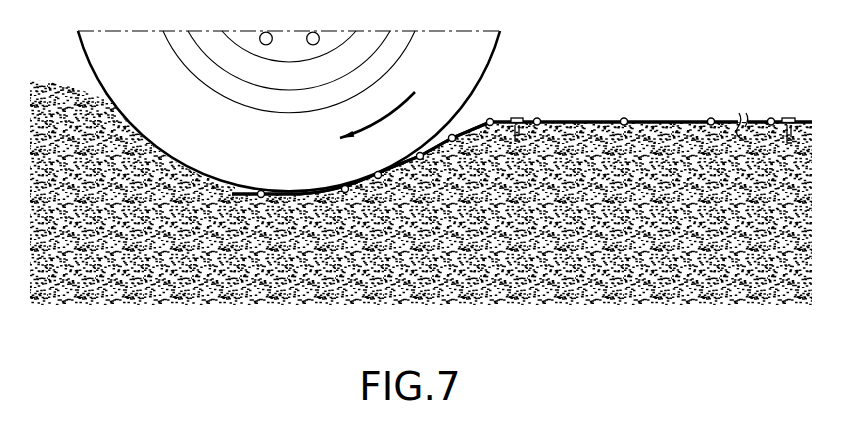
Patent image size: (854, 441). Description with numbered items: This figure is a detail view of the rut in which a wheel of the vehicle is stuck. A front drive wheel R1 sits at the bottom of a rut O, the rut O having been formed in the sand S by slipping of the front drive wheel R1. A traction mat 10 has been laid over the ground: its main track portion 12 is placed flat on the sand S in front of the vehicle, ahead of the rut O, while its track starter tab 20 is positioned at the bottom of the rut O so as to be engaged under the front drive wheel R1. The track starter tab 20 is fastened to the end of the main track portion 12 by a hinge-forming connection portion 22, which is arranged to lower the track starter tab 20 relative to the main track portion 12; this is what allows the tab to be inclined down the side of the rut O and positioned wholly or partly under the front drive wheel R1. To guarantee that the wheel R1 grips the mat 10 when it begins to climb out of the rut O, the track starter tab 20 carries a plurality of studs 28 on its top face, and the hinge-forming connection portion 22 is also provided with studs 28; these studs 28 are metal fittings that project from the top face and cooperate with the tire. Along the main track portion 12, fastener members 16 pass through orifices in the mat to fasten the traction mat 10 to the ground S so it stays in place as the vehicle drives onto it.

The traction mat 10 is at (522, 144).
The main track portion 12 is at (665, 118).
The fastener members 16 is at (516, 116).
The track starter tab 20 is at (319, 197).
The hinge-forming connection portion 22 is at (449, 142).
The studs 28 is at (331, 189).
The rut O is at (212, 189).
The sand S is at (421, 192).
The front drive wheel R1 is at (470, 60).